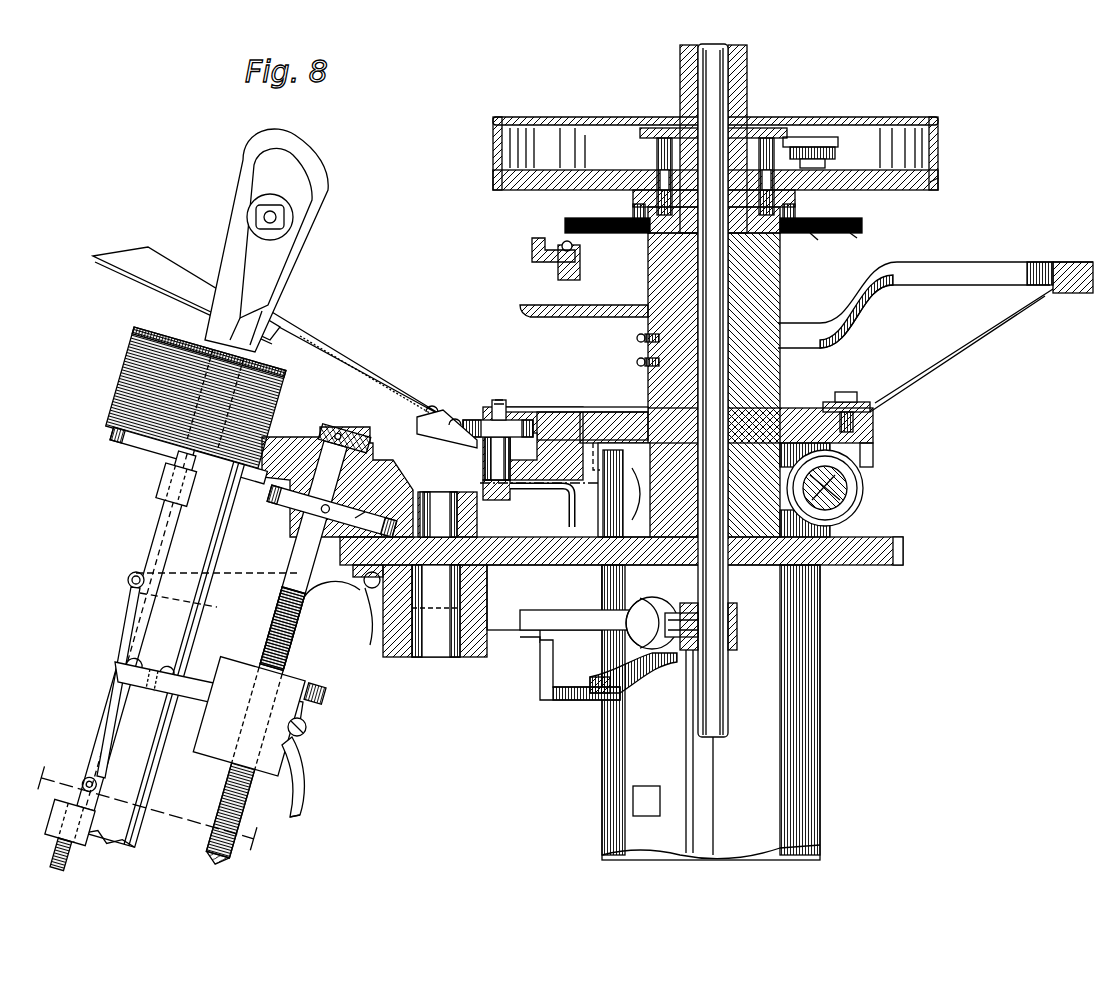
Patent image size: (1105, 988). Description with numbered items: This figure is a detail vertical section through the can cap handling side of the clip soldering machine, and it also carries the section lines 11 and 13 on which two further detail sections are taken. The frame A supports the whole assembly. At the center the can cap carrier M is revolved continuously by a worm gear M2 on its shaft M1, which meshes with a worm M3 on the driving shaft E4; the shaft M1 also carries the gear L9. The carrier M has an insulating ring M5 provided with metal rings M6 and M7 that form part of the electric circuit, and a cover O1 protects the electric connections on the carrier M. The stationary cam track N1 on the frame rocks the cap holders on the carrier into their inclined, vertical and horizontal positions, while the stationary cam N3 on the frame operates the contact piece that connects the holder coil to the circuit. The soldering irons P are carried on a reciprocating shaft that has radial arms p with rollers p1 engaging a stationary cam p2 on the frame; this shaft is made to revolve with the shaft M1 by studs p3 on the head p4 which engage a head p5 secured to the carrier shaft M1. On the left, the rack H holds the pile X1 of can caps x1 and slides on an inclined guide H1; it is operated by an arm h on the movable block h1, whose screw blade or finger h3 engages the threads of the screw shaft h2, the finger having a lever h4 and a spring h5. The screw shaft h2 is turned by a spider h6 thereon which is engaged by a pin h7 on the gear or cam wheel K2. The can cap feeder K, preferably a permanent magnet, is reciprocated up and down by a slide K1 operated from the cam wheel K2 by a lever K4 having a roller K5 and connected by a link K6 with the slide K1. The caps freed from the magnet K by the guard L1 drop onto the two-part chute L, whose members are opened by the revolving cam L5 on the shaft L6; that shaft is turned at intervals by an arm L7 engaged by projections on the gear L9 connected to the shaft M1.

The cover O1 is at (937, 165).
The studs p3 is at (770, 130).
The head p4 is at (748, 100).
The head p5 is at (940, 180).
The can cap carrier M is at (780, 237).
The insulating ring M5 is at (862, 225).
The metal ring M6 is at (857, 236).
The metal ring M7 is at (813, 237).
The frame A is at (608, 588).
The carrier shaft M1 is at (770, 383).
The worm gear M2 is at (655, 473).
The worm M3 is at (863, 490).
The driving shaft E4 is at (845, 505).
The section line 11— 11 is at (873, 467).
The gear L9 is at (870, 565).
The soldering irons P is at (720, 592).
The radial arms p is at (674, 613).
The rollers p1 is at (646, 598).
The stationary cam p2 is at (660, 672).
The stationary cam track N1 is at (1068, 262).
The stationary cam N3 is at (530, 242).
The can cap delivery device or chute L is at (330, 378).
The guard L1 is at (166, 248).
The revolving cam L5 is at (470, 417).
The cam shaft L6 is at (500, 415).
The arm L7 is at (550, 500).
The can cap feeder K is at (326, 198).
The slide K1 is at (163, 516).
The gear or cam wheel K2 is at (389, 542).
The lever K4 is at (345, 592).
The roller K5 is at (370, 612).
The link K6 is at (122, 611).
The pile or stack of can caps X1 is at (122, 372).
The can cap x1 is at (140, 334).
The can cap rack H is at (145, 440).
The inclined guide H1 is at (167, 740).
The arm h is at (198, 686).
The movable block h1 is at (249, 716).
The screw shaft h2 is at (290, 648).
The screw blade or finger h3 is at (325, 692).
The lever h4 is at (290, 762).
The spring h5 is at (278, 773).
The spider h6 is at (280, 502).
The pin h7 is at (392, 510).
The section line 13— 13 is at (145, 814).